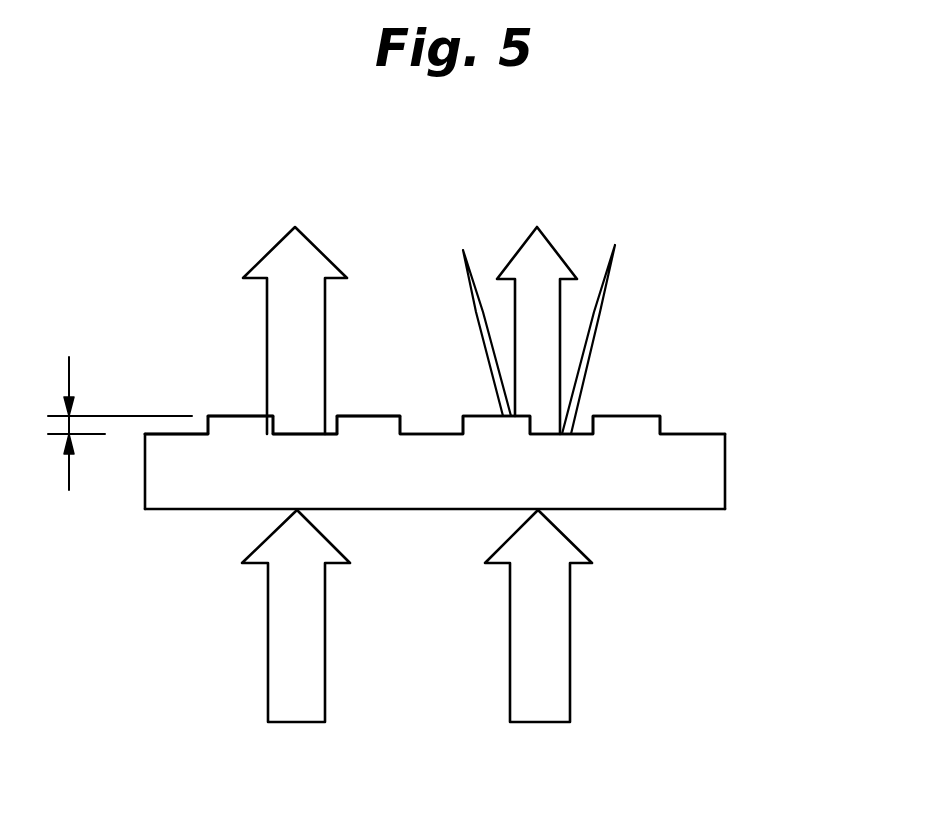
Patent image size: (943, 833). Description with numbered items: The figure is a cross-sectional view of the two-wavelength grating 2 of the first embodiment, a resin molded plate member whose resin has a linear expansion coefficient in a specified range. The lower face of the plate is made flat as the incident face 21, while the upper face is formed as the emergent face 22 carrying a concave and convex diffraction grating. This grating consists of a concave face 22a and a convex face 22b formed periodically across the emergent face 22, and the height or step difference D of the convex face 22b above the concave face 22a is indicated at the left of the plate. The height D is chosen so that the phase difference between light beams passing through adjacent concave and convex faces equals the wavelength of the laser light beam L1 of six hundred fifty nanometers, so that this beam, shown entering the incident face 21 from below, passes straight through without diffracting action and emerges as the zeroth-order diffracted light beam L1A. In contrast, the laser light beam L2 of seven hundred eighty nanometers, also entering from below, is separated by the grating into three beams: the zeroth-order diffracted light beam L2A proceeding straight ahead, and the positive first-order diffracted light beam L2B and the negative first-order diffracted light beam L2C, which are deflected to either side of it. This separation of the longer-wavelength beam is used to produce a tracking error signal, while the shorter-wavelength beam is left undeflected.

The two-wavelength grating 2 is at (725, 470).
The incident face 21 is at (693, 510).
The emergent face 22 is at (679, 434).
The concave face 22a is at (165, 434).
The convex face 22b is at (220, 416).
The height (step difference) D is at (106, 423).
The laser light beam L1 is at (267, 665).
The laser light beam L2 is at (570, 683).
The zeroth-order diffracted light beam L1A is at (273, 245).
The zeroth-order diffracted light beam L2A is at (519, 242).
The positive first-order diffracted light beam L2B is at (463, 255).
The negative first-order diffracted light beam L2C is at (617, 268).